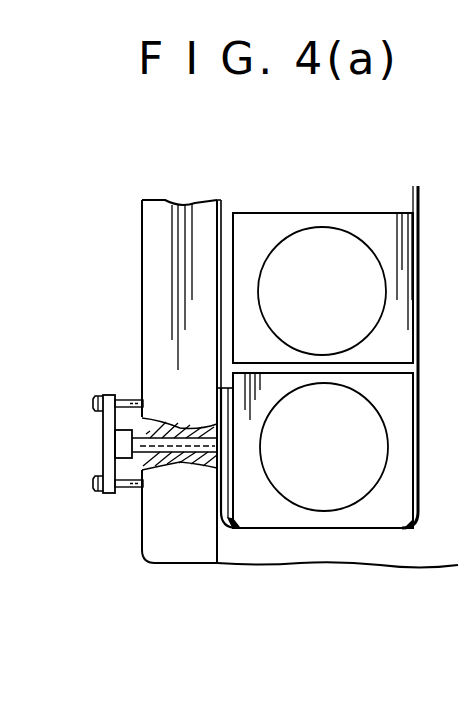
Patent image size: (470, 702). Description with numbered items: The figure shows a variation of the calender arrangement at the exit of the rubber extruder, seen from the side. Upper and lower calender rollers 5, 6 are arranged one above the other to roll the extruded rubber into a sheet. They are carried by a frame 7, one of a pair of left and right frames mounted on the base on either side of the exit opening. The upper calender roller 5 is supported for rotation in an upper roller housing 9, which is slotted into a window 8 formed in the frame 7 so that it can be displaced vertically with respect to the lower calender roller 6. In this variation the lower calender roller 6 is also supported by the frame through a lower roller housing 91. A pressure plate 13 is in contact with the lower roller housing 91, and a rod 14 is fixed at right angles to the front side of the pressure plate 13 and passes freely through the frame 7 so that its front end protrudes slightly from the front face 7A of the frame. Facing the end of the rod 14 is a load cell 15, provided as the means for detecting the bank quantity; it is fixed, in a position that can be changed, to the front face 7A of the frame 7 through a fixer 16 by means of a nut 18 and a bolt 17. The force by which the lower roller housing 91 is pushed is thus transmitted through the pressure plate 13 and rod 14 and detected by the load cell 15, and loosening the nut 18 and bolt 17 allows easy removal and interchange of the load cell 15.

The upper calender roller 5 is at (332, 247).
The lower calender roller 6 is at (326, 493).
The frame 7 is at (157, 226).
The front face of frame 7A is at (142, 296).
The window 8 is at (226, 208).
The upper roller housing 9 is at (290, 226).
The pressure plate 13 is at (230, 522).
The rod 14 is at (180, 443).
The load cell 15 is at (110, 439).
The fixer 16 is at (110, 459).
The bolt 17 is at (128, 400).
The nut 18 is at (95, 402).
The lower roller housing 91 is at (398, 505).